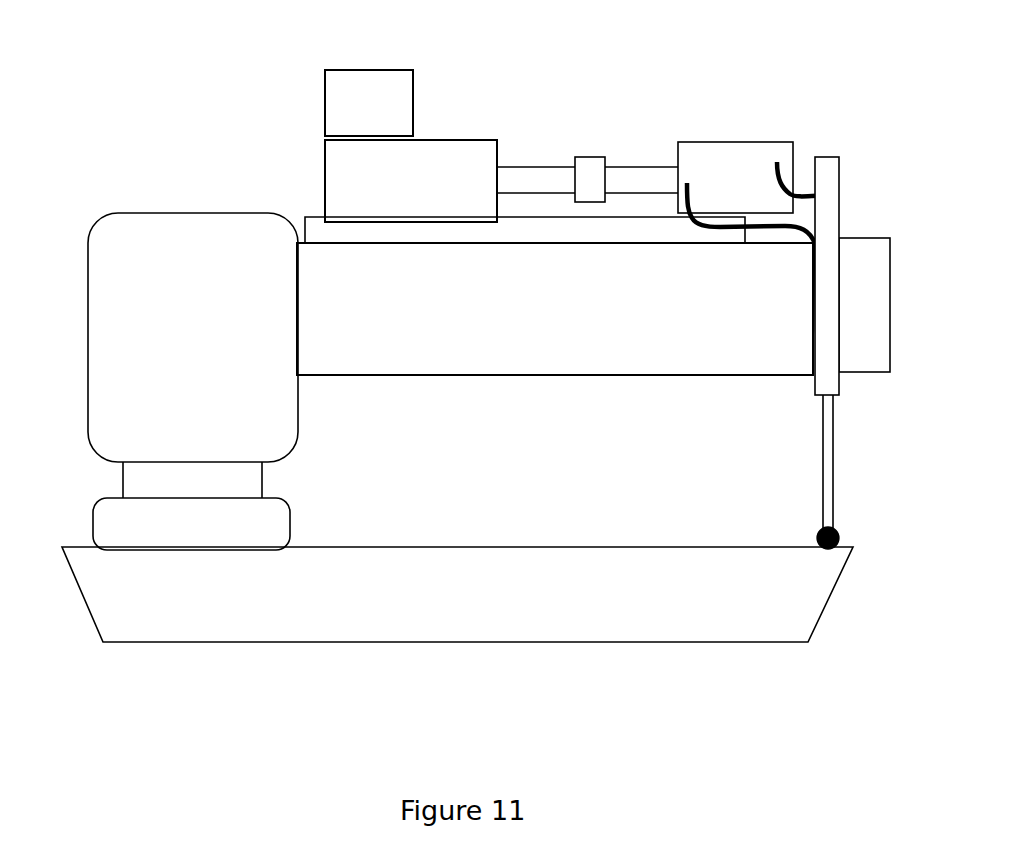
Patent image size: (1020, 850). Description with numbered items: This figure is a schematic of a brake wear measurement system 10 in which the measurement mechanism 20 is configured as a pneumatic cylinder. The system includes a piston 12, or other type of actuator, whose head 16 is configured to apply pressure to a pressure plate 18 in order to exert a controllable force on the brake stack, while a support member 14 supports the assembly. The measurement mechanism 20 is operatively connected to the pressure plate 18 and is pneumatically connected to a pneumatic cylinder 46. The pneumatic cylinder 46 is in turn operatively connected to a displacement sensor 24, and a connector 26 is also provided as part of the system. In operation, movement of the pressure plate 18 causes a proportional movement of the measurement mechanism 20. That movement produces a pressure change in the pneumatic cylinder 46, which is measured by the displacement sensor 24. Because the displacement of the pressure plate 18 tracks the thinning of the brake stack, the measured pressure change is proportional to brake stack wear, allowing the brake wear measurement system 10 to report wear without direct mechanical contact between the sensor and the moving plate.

The brake wear measurement system 10 is at (204, 48).
The piston 12 is at (168, 257).
The support member 14 is at (713, 343).
The head 16 is at (120, 525).
The pressure plate 18 is at (190, 642).
The measurement mechanism 20 is at (824, 240).
The displacement sensor 24 is at (462, 160).
The connector 26 is at (383, 95).
The pneumatic cylinder 46 is at (711, 157).